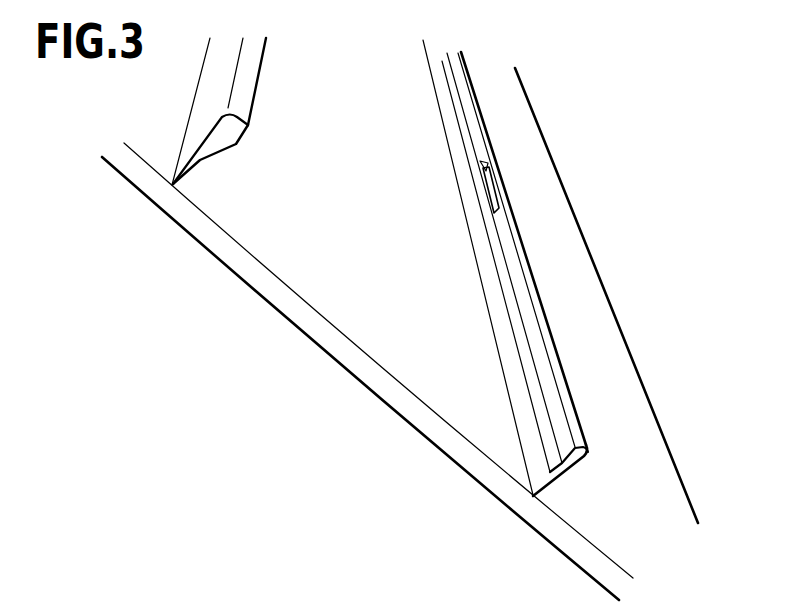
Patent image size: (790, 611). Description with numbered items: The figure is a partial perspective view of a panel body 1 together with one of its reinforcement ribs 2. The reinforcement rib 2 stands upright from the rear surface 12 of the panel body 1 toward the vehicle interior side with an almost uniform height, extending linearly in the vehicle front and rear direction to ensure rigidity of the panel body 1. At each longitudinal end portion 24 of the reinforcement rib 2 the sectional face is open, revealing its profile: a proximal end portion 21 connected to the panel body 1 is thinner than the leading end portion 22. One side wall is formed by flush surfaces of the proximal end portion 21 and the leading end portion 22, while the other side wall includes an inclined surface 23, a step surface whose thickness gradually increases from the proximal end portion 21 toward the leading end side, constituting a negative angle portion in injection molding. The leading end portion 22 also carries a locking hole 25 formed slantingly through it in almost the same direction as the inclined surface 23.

The panel body 1 is at (367, 371).
The rear surface 12 is at (395, 350).
The reinforcement rib 2 is at (274, 63).
The proximal end portion 21 is at (518, 399).
The leading end portion 22 is at (540, 348).
The inclined surface 23 is at (537, 396).
The longitudinal end portion 24 is at (574, 462).
The locking hole 25 is at (483, 161).